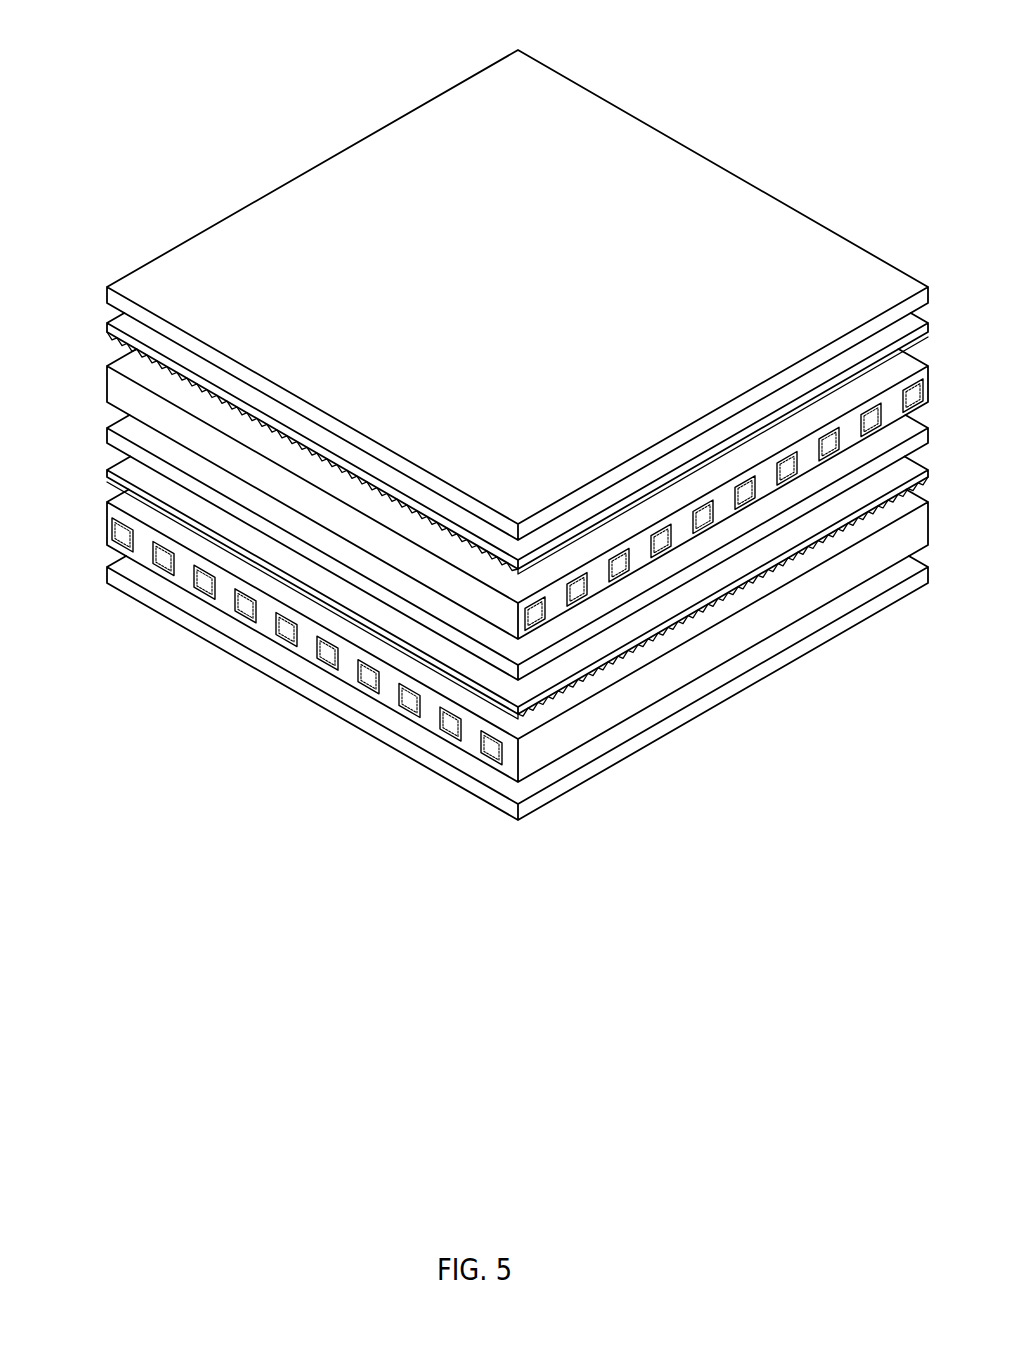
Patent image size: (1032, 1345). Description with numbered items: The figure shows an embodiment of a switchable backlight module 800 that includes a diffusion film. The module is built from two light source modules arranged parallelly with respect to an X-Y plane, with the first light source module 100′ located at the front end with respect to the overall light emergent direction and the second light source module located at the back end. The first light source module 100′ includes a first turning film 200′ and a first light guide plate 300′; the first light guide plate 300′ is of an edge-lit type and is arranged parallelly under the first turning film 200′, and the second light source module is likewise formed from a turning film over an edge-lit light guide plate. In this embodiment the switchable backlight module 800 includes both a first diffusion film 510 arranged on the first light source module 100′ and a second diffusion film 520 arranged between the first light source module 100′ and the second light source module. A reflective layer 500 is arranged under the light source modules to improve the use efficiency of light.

The switchable backlight module 800 is at (248, 57).
The first diffusion film 510 is at (447, 57).
The first light source module 100′ is at (112, 167).
The first turning film 200′ is at (99, 302).
The first light guide plate 300′ is at (93, 362).
The second diffusion film 520 is at (79, 441).
The reflective layer 500 is at (490, 846).